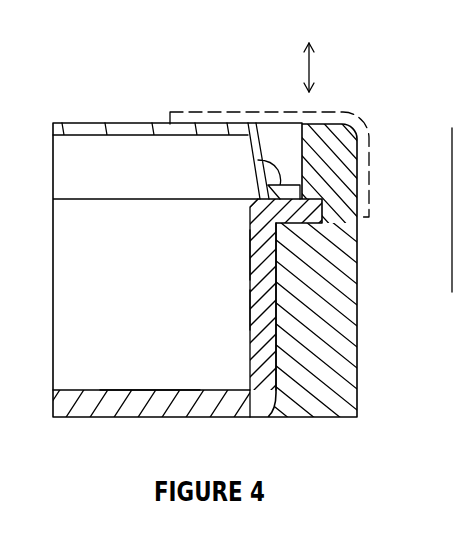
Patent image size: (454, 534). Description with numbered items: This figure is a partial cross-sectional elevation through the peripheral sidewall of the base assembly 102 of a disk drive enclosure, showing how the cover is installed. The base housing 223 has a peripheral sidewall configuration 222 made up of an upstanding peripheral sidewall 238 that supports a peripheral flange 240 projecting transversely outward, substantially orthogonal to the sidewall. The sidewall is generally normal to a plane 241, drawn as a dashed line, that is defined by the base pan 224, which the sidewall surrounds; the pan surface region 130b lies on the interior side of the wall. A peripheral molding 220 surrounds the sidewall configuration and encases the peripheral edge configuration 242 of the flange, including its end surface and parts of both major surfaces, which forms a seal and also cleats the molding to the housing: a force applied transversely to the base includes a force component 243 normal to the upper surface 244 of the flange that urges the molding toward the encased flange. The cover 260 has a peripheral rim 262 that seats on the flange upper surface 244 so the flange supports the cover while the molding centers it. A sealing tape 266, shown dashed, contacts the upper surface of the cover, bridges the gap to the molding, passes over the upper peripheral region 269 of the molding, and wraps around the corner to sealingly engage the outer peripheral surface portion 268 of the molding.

The base assembly 102 is at (260, 425).
The base layer 130b is at (144, 390).
The peripheral molding 220 is at (357, 392).
The peripheral sidewall configuration 222 is at (247, 253).
The base housing 223 is at (280, 342).
The base pan 224 is at (138, 417).
The upstanding peripheral sidewall 238 is at (250, 296).
The peripheral flange 240 is at (297, 233).
The plane 241 is at (0, 404).
The peripheral edge configuration 242 is at (325, 220).
The force component 243 is at (316, 63).
The upper surface of flange 244 is at (335, 136).
The cover 260 is at (73, 127).
The peripheral rim 262 is at (252, 160).
The sealing tape 266 is at (202, 112).
The outer peripheral surface portion of molding 268 is at (358, 176).
The upper peripheral region of molding 269 is at (305, 199).